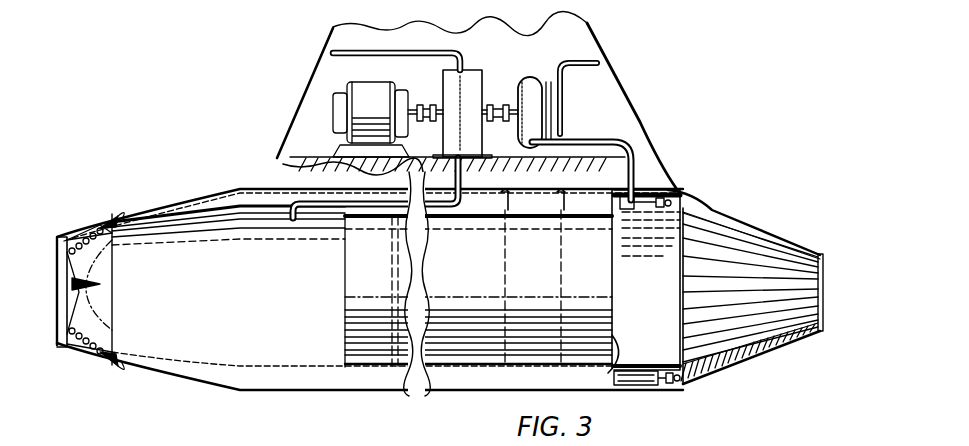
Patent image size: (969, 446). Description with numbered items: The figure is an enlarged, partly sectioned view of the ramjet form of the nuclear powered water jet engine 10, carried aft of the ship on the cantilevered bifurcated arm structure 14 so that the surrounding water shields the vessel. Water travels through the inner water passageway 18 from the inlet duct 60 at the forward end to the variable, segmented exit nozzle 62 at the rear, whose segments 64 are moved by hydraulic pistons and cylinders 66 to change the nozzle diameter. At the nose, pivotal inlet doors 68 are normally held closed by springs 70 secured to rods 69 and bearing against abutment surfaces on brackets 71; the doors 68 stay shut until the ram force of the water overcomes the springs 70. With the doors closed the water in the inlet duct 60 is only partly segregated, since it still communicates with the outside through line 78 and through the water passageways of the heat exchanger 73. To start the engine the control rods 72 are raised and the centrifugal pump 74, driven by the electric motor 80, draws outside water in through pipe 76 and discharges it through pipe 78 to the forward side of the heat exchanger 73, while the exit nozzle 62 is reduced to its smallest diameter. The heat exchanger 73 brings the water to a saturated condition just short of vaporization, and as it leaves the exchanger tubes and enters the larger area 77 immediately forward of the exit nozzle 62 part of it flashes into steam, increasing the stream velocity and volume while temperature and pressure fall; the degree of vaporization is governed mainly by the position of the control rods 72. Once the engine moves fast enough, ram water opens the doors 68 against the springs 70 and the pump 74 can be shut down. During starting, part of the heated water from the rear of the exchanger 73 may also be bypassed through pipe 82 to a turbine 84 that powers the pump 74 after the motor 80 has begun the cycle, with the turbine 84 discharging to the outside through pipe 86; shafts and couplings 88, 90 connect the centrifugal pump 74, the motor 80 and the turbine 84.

The nuclear powered water jet engine 10 is at (686, 186).
The bifurcated arm structure 14 is at (614, 87).
The inner water passageway 18 is at (646, 311).
The inlet duct 60 is at (200, 295).
The variable, segmented exit nozzle 62 is at (760, 305).
The nozzle segment 64 is at (717, 208).
The hydraulic piston and cylinder 66 is at (620, 197).
The pivotal inlet door 68 is at (100, 284).
The rod 69 is at (100, 247).
The spring 70 is at (93, 226).
The bracket 71 is at (134, 214).
The control rod 72 is at (558, 197).
The heat exchanger 73 is at (483, 275).
The centrifugal pump 74 is at (470, 121).
The pipe 76 is at (463, 52).
The area forward of exit nozzle 77 is at (608, 373).
The line 78 is at (291, 204).
The electric motor 80 is at (378, 113).
The pipe 82 is at (604, 129).
The turbine 84 is at (540, 78).
The pipe 86 is at (566, 71).
The shaft and coupling 88 is at (430, 105).
The shaft and coupling 90 is at (498, 105).